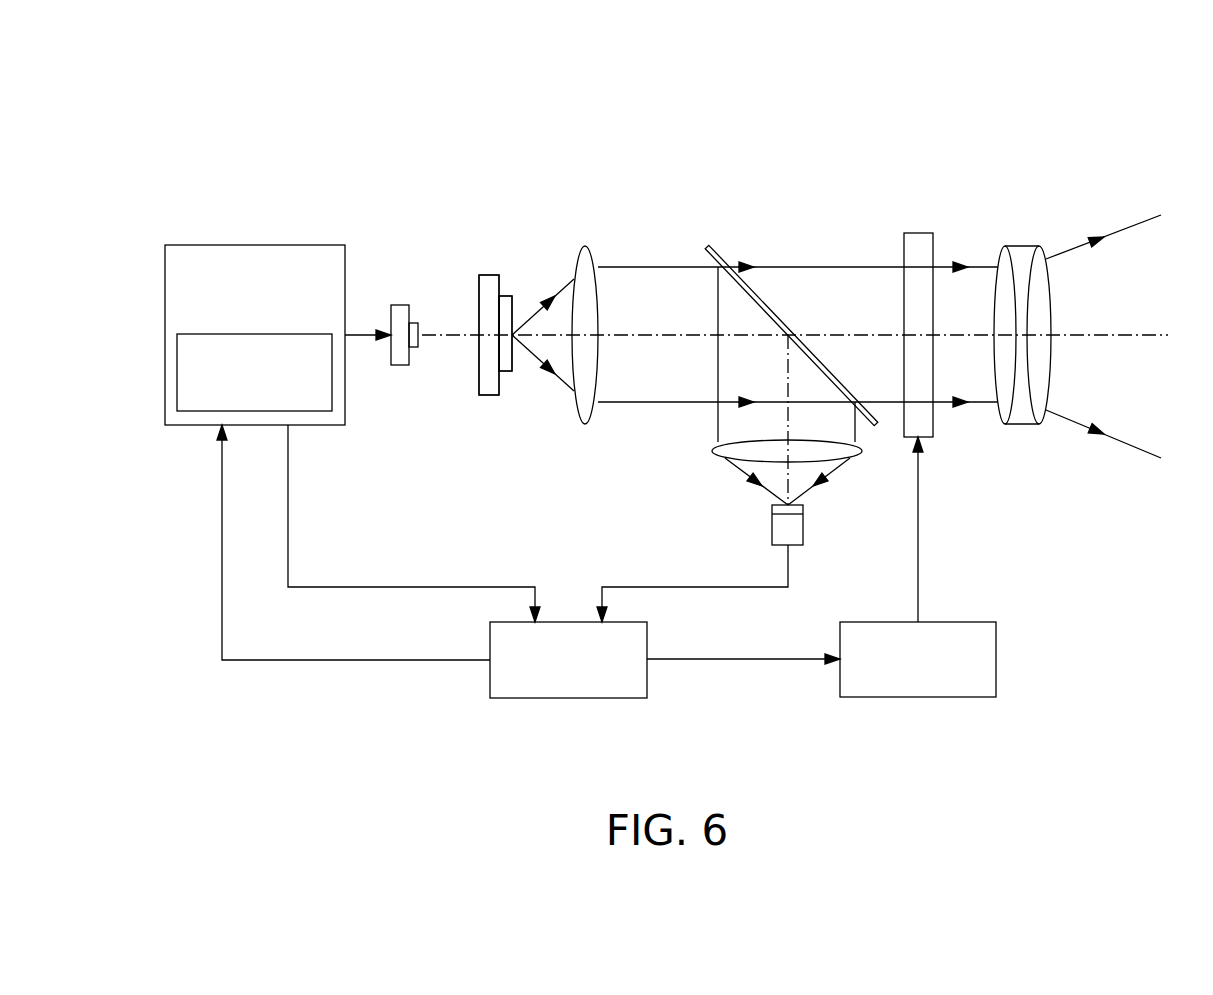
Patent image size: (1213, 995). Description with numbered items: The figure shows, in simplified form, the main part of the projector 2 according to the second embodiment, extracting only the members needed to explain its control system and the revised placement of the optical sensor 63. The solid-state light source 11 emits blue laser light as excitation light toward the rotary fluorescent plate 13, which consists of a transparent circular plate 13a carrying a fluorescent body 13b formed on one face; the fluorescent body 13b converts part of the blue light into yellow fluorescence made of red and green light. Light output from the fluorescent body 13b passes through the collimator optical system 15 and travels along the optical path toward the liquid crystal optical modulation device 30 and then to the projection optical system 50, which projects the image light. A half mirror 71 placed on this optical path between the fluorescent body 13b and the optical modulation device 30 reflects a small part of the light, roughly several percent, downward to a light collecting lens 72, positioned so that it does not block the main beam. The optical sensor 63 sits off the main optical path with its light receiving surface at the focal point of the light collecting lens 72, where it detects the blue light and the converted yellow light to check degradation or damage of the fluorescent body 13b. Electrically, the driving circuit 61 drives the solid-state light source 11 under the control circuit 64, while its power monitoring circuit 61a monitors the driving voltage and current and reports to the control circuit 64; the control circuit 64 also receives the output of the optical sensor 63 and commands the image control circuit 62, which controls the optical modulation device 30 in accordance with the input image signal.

The projector 2 is at (1044, 112).
The solid-state light source 11 is at (402, 305).
The rotary fluorescent plate 13 is at (555, 201).
The circular plate 13a is at (489, 275).
The fluorescent body 13b is at (505, 296).
The collimator optical system 15 is at (585, 246).
The half mirror 71 is at (722, 262).
The light collecting lens 72 is at (716, 461).
The optical sensor 63 is at (803, 523).
The liquid crystal optical modulation device 30 is at (918, 233).
The projection optical system 50 is at (1024, 246).
The driving circuit 61 is at (305, 245).
The power monitoring circuit 61a is at (177, 362).
The image control circuit 62 is at (980, 622).
The control circuit 64 is at (647, 640).